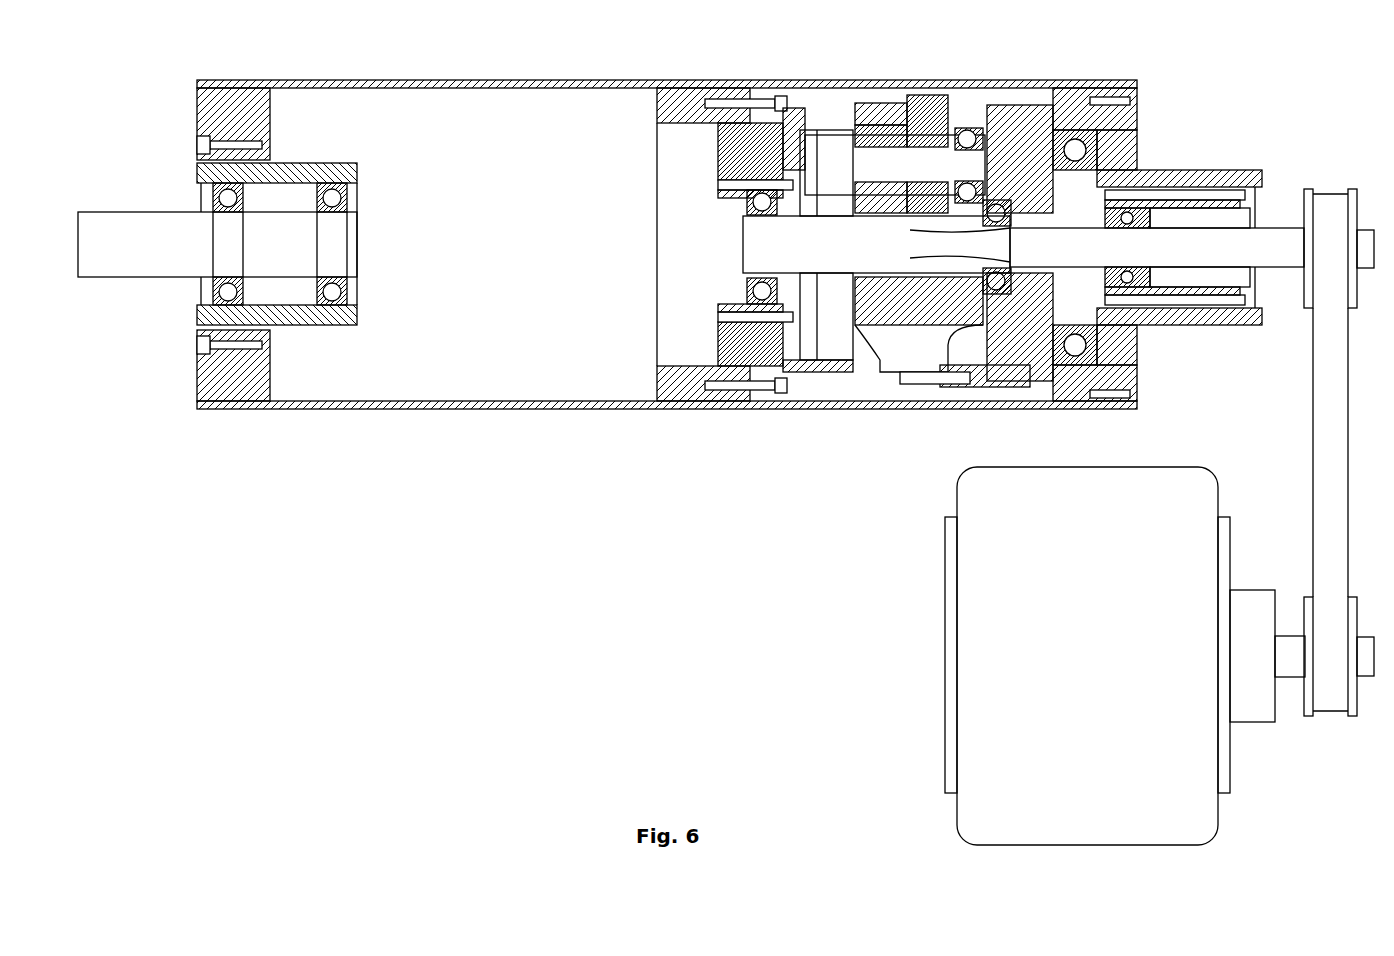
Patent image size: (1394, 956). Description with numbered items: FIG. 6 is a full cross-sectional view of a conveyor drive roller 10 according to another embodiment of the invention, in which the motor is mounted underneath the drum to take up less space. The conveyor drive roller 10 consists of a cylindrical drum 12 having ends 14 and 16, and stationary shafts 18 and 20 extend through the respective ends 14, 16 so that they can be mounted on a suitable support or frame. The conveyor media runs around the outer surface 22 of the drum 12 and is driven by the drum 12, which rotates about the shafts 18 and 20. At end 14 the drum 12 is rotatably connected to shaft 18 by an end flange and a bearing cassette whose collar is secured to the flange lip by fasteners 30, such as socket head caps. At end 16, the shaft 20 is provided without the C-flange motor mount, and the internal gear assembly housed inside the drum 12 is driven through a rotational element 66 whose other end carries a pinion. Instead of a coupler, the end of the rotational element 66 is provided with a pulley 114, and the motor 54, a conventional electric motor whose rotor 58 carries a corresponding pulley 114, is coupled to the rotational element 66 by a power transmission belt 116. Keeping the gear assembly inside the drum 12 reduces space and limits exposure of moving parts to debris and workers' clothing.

The conveyor drive roller 10 is at (856, 57).
The cylindrical drum 12 is at (921, 82).
The end 14 is at (185, 113).
The end 16 is at (1151, 105).
The stationary shaft 18 is at (121, 262).
The stationary shaft 20 is at (1194, 172).
The outer surface 22 is at (541, 79).
The fasteners 30 is at (197, 147).
The motor 54 is at (1110, 656).
The rotor 58 is at (1290, 665).
The rotational element 66 is at (1201, 246).
The pulley 114 is at (1305, 197).
The power transmission belt 116 is at (1312, 411).